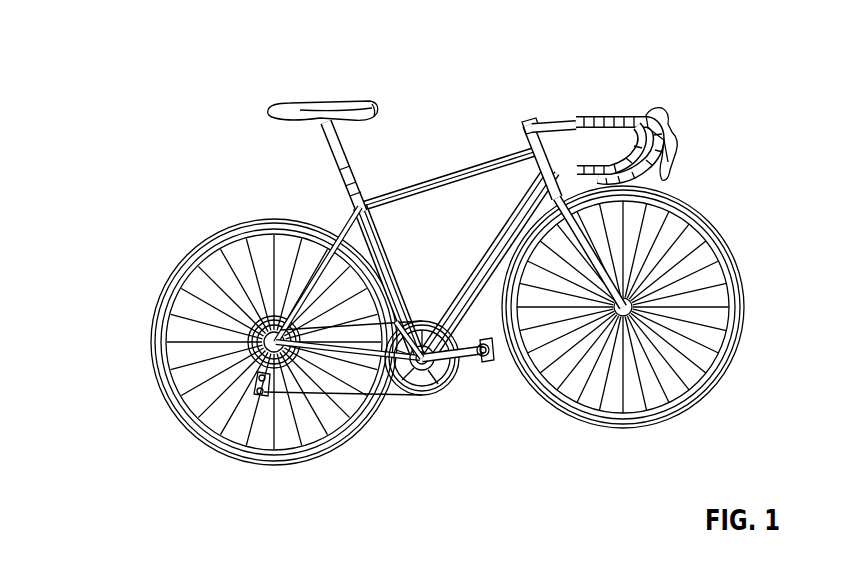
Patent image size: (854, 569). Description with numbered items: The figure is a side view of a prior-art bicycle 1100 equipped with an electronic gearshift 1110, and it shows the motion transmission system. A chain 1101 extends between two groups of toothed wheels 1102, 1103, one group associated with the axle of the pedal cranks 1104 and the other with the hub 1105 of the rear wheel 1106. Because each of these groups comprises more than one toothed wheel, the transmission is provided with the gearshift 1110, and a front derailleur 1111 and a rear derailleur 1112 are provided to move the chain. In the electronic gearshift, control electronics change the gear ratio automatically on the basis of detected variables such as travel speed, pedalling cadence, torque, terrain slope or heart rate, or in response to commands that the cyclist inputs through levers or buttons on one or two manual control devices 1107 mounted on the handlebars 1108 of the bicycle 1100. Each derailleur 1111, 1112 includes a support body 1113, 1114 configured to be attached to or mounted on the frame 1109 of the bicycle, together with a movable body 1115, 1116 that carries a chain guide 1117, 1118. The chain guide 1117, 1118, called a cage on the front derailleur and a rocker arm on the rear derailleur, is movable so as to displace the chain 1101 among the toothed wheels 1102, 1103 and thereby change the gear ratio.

The bicycle 1100 is at (160, 105).
The chain 1101 is at (240, 436).
The toothed wheels 1102 is at (434, 404).
The toothed wheels 1103 is at (266, 304).
The pedal cranks 1104 is at (408, 398).
The hub 1105 is at (210, 276).
The rear wheel 1106 is at (250, 226).
The manual control devices 1107 is at (690, 116).
The handlebars 1108 is at (586, 118).
The frame 1109 is at (464, 148).
The gearshift 1110 is at (312, 468).
The front derailleur 1111 is at (433, 285).
The rear derailleur 1112 is at (204, 430).
The support body 1113 is at (405, 282).
The support body 1114 is at (238, 343).
The movable body 1115 is at (476, 380).
The movable body 1116 is at (252, 360).
The chain guide 1117 is at (483, 350).
The chain guide 1118 is at (232, 406).